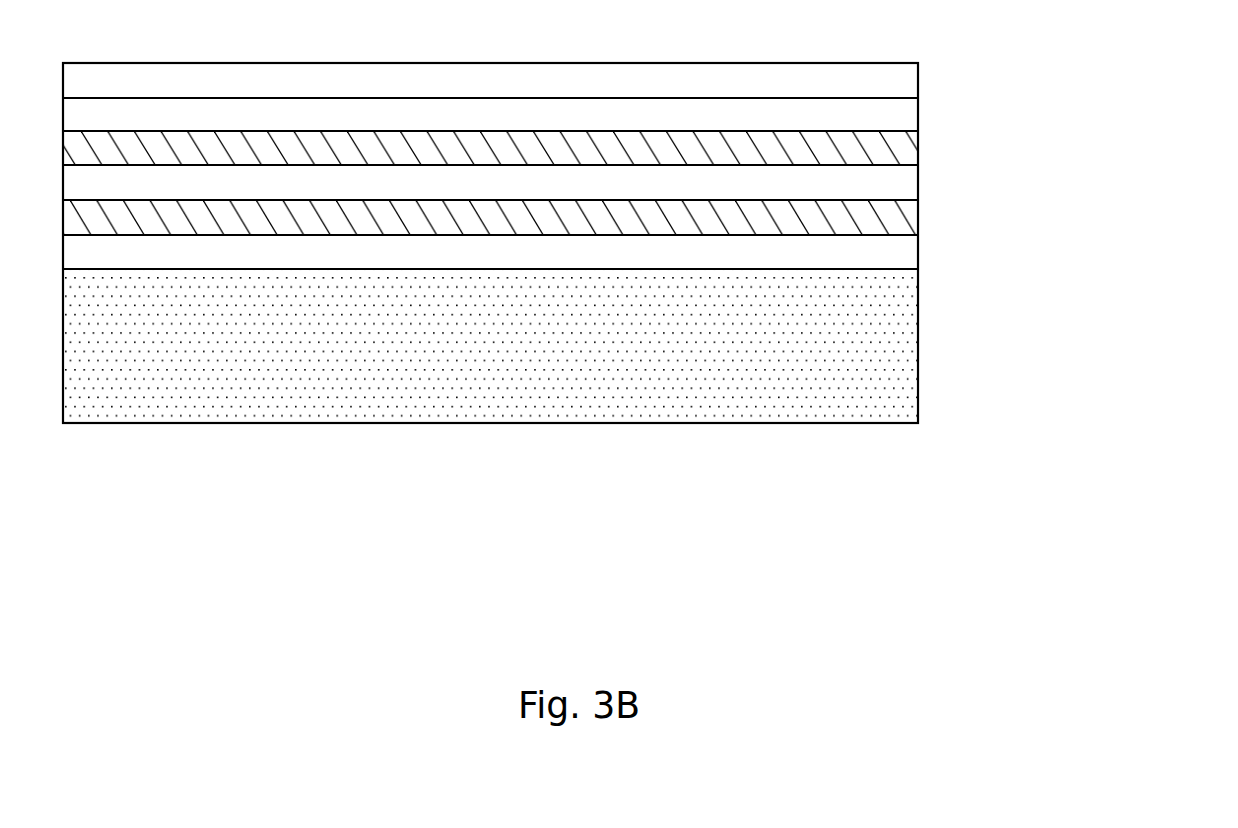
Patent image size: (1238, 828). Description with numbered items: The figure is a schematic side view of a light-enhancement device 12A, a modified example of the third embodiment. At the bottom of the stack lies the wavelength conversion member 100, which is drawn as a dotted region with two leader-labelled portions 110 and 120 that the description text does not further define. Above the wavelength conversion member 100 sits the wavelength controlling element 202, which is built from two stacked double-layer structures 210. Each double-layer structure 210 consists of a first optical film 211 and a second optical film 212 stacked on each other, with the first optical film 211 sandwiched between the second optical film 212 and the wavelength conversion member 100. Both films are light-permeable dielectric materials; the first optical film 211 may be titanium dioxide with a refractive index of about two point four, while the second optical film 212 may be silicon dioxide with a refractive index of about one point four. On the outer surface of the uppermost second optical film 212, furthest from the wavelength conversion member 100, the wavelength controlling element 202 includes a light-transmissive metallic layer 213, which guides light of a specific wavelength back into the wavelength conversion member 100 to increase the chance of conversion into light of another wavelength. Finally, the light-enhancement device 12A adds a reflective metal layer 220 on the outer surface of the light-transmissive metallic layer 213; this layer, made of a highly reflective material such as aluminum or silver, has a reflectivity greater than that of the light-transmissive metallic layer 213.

The light-enhancement device 12A is at (1152, 35).
The reflective metal layer 220 is at (902, 80).
The light-transmissive metallic layer 213 is at (902, 112).
The second optical film 212 is at (902, 147).
The first optical film 211 is at (902, 180).
The double-layer structure 210 is at (575, 204).
The wavelength controlling element 202 is at (608, 180).
The substrate upper portion 110 is at (918, 307).
The substrate lower portion 120 is at (902, 335).
The wavelength conversion member 100 is at (608, 346).